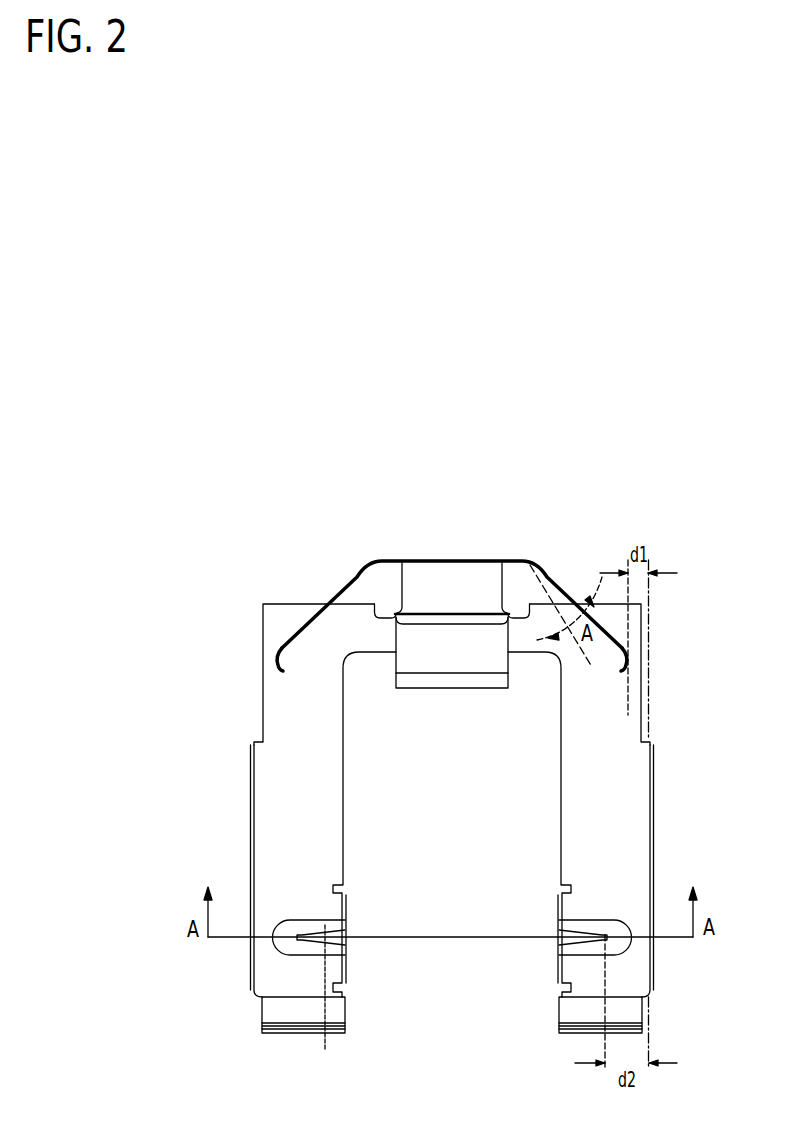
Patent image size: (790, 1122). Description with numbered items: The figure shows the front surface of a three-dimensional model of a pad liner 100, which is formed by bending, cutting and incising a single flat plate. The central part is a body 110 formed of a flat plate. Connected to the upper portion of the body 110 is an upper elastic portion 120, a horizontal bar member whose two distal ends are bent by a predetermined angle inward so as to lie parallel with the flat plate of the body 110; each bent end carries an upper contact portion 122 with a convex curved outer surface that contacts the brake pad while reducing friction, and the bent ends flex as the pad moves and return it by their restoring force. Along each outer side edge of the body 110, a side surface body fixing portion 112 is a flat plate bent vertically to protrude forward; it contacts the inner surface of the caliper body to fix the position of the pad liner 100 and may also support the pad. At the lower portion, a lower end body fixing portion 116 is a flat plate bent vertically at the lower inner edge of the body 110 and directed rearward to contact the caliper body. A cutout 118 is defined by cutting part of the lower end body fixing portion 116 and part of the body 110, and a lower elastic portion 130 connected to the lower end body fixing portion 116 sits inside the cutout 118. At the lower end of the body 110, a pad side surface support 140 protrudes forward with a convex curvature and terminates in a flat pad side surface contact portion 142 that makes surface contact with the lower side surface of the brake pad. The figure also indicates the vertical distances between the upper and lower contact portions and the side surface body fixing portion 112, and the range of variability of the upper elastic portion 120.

The pad liner 100 is at (183, 530).
The body 110 is at (283, 709).
The side surface body fixing portion 112 is at (253, 763).
The lower end body fixing portion 116 is at (325, 1030).
The cutout 118 is at (281, 948).
The upper elastic portion 120 is at (334, 590).
The upper contact portion 122 is at (279, 667).
The lower elastic portion 130 is at (327, 942).
The pad side surface support 140 is at (268, 1010).
The pad side surface contact portion 142 is at (328, 1022).